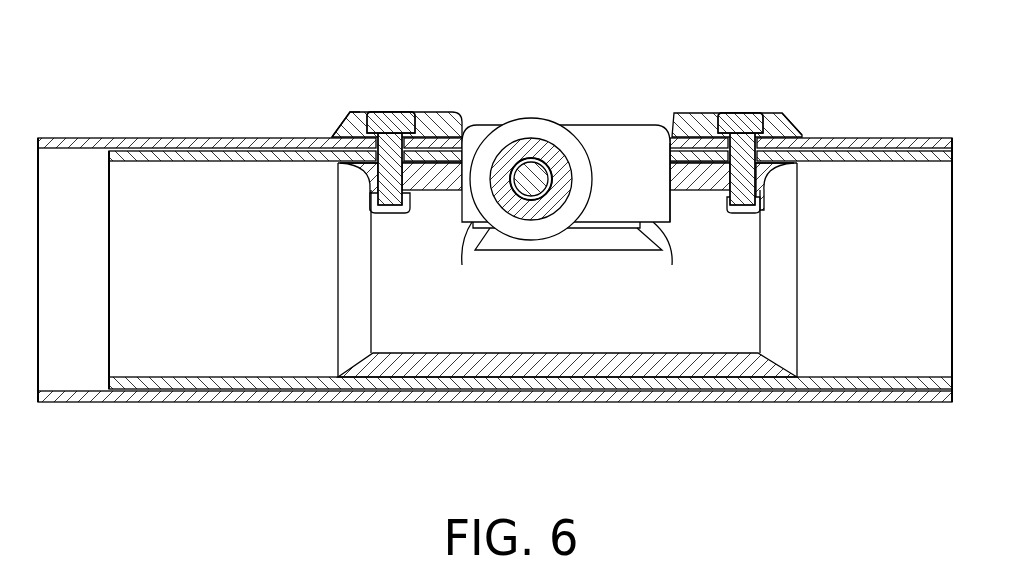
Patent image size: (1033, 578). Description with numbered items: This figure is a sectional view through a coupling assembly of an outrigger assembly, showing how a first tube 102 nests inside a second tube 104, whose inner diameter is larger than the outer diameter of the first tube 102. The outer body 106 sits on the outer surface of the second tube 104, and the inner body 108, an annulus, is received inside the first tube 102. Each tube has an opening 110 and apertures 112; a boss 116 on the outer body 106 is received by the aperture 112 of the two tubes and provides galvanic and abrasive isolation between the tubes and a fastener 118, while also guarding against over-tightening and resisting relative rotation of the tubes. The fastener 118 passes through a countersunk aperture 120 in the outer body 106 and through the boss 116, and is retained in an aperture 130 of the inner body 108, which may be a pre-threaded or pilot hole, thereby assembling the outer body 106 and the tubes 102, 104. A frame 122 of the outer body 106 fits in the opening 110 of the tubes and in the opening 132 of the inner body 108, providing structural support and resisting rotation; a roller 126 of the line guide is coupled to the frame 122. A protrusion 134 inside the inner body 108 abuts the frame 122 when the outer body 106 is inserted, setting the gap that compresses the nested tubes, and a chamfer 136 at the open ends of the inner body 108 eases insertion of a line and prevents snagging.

The first tube 102 is at (140, 170).
The second tube 104 is at (65, 167).
The outer body 106 is at (596, 174).
The inner body 108 is at (425, 360).
The opening 110 is at (693, 132).
The aperture 112 is at (432, 120).
The boss 116 is at (380, 120).
The fastener 118 is at (607, 115).
The aperture 120 is at (363, 118).
The frame 122 is at (598, 143).
The roller 126 is at (537, 147).
The aperture 130 is at (367, 210).
The opening 132 is at (487, 133).
The protrusion 134 is at (618, 225).
The chamfer 136 is at (367, 277).